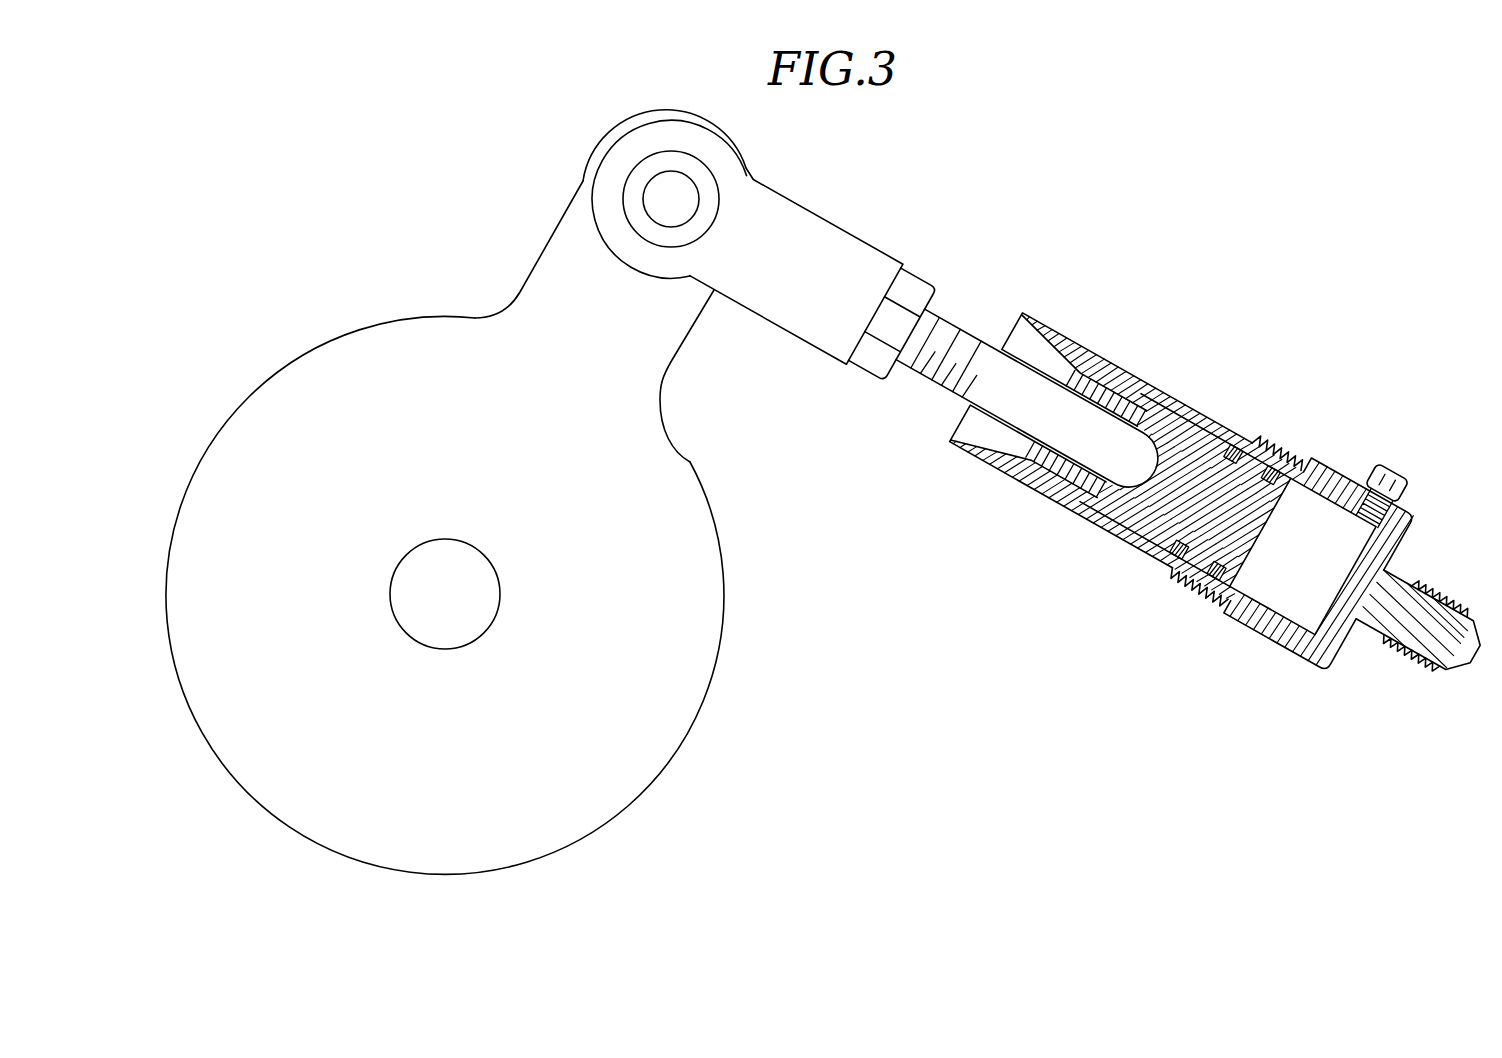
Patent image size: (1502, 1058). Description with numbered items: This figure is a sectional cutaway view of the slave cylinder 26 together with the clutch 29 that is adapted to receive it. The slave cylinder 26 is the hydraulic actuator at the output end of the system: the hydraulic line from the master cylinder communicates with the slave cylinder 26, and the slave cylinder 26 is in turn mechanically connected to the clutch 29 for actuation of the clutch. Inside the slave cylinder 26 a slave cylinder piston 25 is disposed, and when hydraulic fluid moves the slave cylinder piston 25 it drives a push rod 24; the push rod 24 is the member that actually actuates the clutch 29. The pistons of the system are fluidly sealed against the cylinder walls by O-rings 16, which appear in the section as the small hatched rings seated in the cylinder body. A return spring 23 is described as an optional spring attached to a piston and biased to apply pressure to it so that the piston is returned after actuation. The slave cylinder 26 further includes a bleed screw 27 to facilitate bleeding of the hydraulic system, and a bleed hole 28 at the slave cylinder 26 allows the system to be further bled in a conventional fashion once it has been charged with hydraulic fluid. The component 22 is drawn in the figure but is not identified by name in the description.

The O-rings 16 is at (1272, 472).
The rod end 22 is at (833, 222).
The return spring 23 is at (928, 278).
The push rod 24 is at (1043, 333).
The slave cylinder piston 25 is at (1185, 412).
The slave cylinder 26 is at (1333, 460).
The bleed screw 27 is at (1393, 470).
The bleed hole 28 is at (1390, 517).
The clutch 29 is at (385, 360).